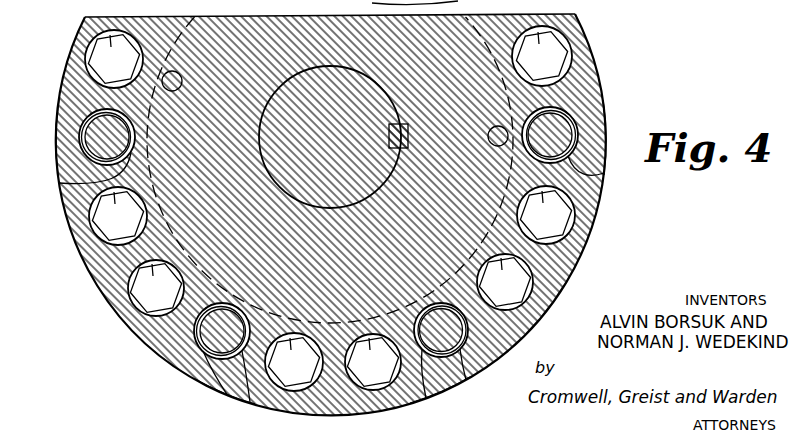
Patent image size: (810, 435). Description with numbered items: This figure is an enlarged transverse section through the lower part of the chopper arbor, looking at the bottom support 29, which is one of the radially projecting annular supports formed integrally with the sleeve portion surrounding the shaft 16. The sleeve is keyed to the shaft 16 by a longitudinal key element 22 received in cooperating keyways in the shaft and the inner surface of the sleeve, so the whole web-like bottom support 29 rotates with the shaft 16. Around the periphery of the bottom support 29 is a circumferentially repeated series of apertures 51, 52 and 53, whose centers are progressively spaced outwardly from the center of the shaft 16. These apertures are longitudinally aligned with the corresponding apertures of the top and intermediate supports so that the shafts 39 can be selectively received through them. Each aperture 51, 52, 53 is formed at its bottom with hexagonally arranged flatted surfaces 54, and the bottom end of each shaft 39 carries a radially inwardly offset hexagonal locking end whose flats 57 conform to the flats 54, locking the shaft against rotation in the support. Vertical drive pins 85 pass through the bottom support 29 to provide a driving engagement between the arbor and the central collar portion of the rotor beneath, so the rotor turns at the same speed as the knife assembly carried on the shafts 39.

The shaft 16 is at (342, 72).
The longitudinal key element 22 is at (405, 134).
The bottom support 29 is at (413, 217).
The shaft 39 is at (80, 110).
The aperture 51 is at (80, 137).
The aperture 52 is at (97, 227).
The aperture 53 is at (97, 63).
The hexagonally arranged flatted surfaces 54 is at (329, 209).
The flats 57 is at (93, 183).
The vertical drive pins 85 is at (182, 72).